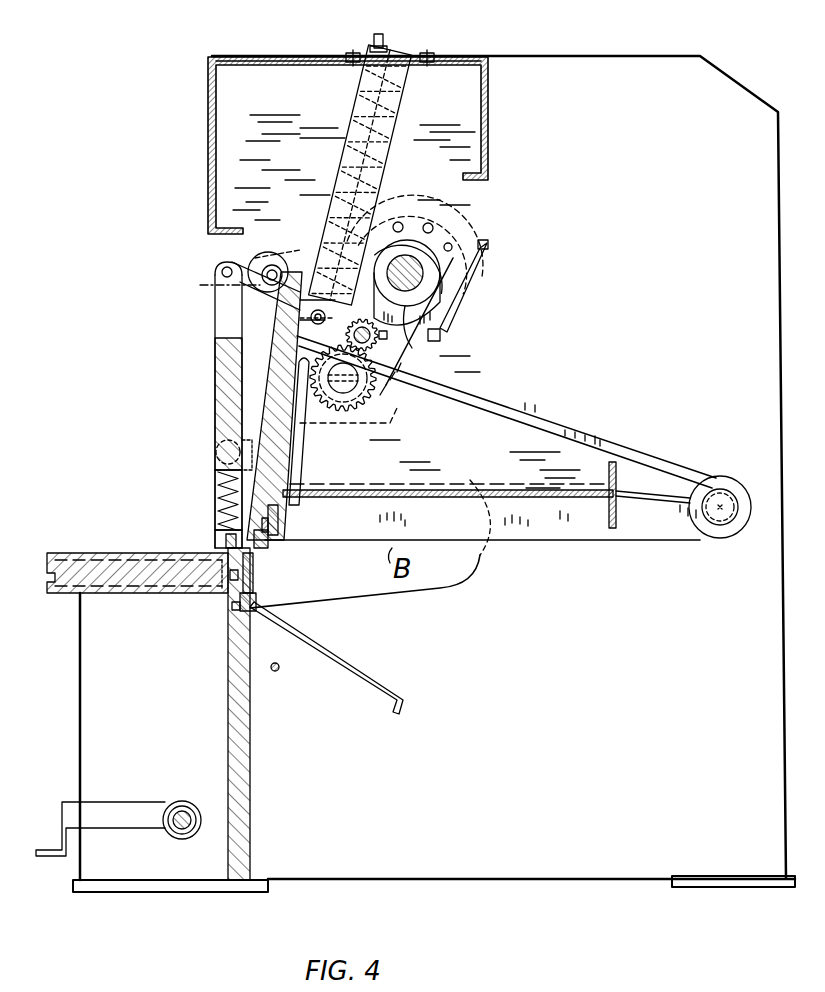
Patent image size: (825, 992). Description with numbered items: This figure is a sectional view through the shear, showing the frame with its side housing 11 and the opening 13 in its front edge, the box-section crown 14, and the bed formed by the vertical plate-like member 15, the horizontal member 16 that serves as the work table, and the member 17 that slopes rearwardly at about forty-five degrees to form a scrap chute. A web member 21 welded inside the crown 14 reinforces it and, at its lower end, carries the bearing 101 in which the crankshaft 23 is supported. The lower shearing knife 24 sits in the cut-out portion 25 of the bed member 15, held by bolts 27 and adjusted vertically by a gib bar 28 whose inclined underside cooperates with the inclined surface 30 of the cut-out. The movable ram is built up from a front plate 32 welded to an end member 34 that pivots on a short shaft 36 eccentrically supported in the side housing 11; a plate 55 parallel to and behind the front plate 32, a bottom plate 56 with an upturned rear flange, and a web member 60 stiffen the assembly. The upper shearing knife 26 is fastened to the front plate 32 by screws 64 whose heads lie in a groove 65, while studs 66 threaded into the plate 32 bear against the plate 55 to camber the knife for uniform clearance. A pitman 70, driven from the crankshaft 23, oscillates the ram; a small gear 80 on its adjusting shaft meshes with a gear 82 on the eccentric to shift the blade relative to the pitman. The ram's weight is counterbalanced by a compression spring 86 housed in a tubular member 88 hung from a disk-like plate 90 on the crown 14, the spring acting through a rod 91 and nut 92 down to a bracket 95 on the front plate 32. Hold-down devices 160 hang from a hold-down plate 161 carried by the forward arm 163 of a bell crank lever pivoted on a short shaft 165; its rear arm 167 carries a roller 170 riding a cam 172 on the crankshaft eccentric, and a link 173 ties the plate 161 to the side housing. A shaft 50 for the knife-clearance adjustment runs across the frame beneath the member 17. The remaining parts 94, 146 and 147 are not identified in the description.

The side housing 11 is at (455, 878).
The opening 13 is at (368, 592).
The crown member 14 is at (212, 135).
The bed member 15 is at (236, 738).
The horizontal member 16 is at (90, 556).
The scrap chute member 17 is at (378, 680).
The web member 21 is at (488, 132).
The crankshaft 23 is at (440, 334).
The lower shearing knife 24 is at (253, 568).
The cut-out portion 25 is at (234, 600).
The upper shearing knife 26 is at (266, 548).
The bolts 27 is at (196, 592).
The gib bar 28 is at (256, 608).
The inclined surface 30 is at (248, 606).
The front plate 32 is at (268, 378).
The end member 34 is at (544, 424).
The shaft-like member 36 is at (722, 492).
The shaft 50 is at (278, 672).
The plate 55 is at (305, 436).
The bottom plate 56 is at (470, 480).
The web member 60 is at (490, 438).
The screws 64 is at (278, 522).
The groove 65 is at (215, 530).
The studs 66 is at (290, 490).
The pitman 70 is at (405, 376).
The small gear 80 is at (398, 362).
The small gear 82 is at (370, 381).
The compression spring 86 is at (348, 126).
The tubular member 88 is at (371, 175).
The disk-like plate 90 is at (430, 56).
The rod 91 is at (340, 176).
The nut 92 is at (386, 40).
The pinion 94 is at (359, 331).
The bracket 95 is at (300, 321).
The bearing 101 is at (490, 256).
The handle 146 is at (168, 786).
The handle shaft 147 is at (184, 830).
The hold-down device 160 is at (215, 508).
The hold-down plate 161 is at (215, 401).
The forward arm 163 is at (234, 262).
The short shaft 165 is at (266, 252).
The rear arm 167 is at (295, 256).
The roller 170 is at (410, 195).
The cam 172 is at (445, 310).
The link 173 is at (242, 446).